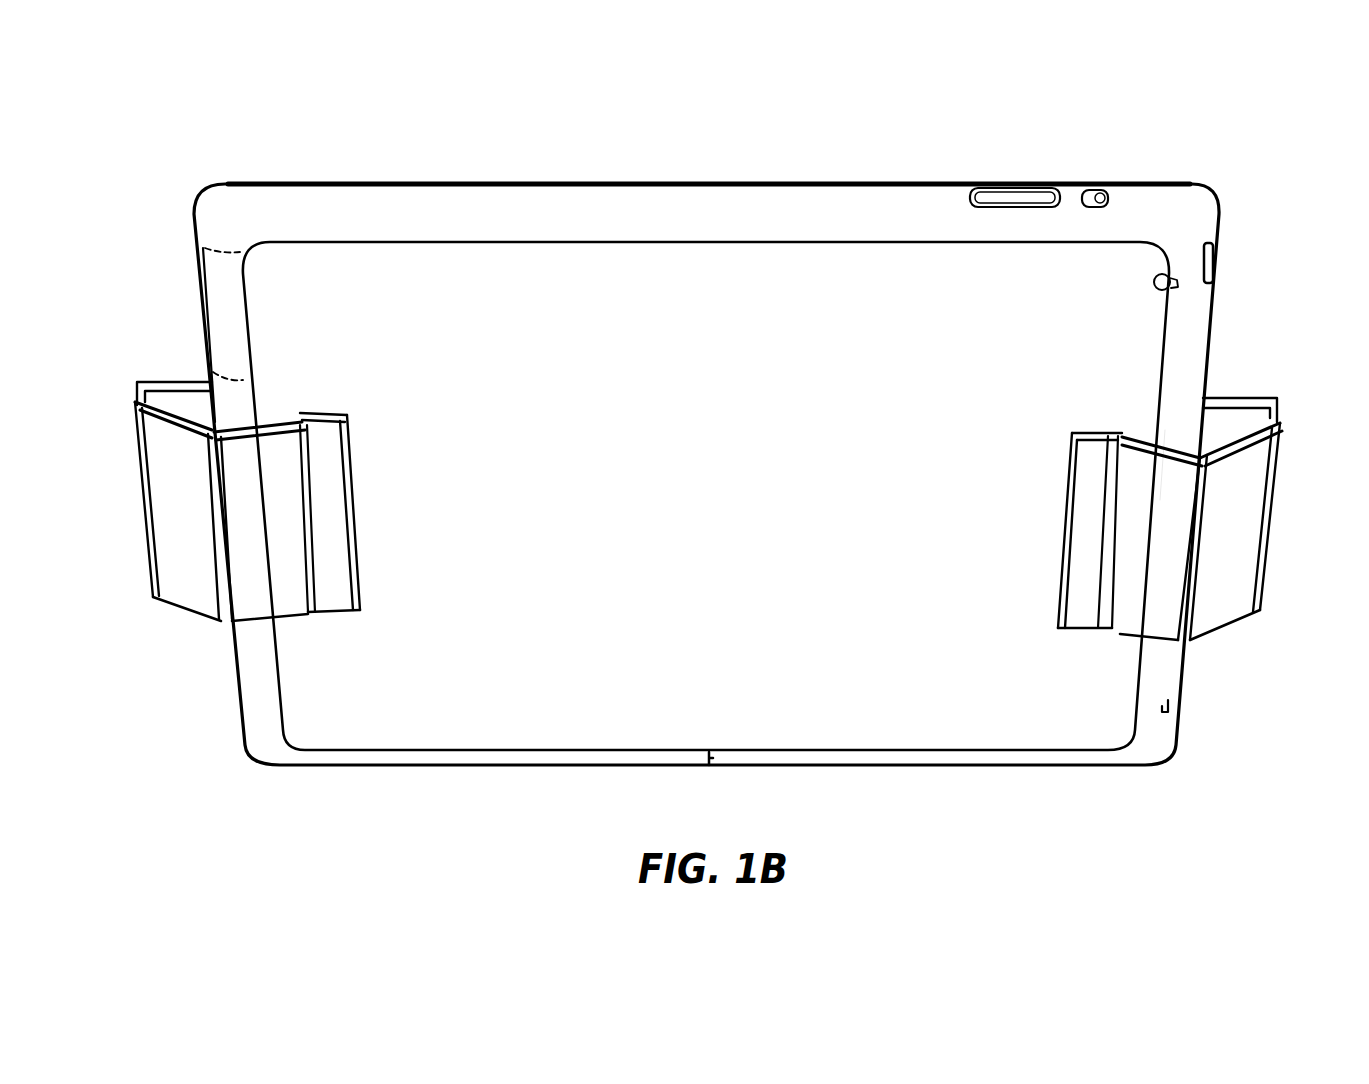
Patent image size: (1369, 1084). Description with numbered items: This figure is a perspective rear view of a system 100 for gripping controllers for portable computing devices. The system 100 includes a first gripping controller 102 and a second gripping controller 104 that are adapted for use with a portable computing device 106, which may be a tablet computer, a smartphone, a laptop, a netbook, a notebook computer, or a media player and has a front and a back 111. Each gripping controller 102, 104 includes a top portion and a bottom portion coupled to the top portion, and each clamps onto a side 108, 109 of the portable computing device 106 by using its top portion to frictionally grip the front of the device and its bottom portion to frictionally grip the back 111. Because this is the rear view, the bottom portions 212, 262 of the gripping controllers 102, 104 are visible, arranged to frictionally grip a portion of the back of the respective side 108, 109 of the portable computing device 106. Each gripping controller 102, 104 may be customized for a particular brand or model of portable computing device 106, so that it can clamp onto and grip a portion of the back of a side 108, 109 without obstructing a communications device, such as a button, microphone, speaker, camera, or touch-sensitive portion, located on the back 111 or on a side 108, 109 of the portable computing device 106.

The system 100 is at (808, 108).
The first gripping controller 102 is at (1206, 532).
The second gripping controller 104 is at (210, 510).
The portable computing device 106 is at (856, 180).
The side 108 is at (1183, 370).
The side 109 is at (255, 705).
The back 111 is at (598, 270).
The bottom portion 212 is at (1217, 615).
The bottom portion 262 is at (248, 620).